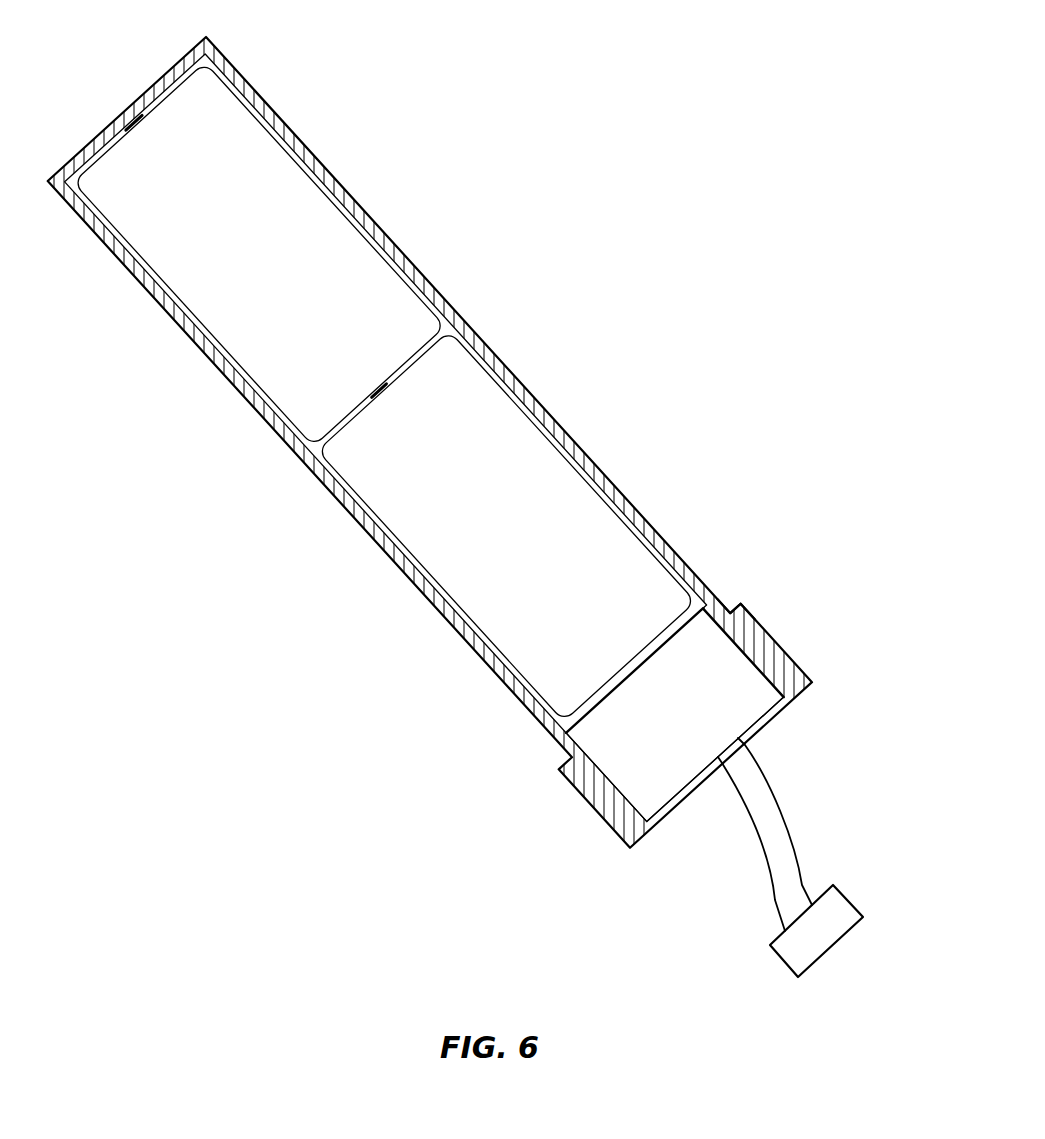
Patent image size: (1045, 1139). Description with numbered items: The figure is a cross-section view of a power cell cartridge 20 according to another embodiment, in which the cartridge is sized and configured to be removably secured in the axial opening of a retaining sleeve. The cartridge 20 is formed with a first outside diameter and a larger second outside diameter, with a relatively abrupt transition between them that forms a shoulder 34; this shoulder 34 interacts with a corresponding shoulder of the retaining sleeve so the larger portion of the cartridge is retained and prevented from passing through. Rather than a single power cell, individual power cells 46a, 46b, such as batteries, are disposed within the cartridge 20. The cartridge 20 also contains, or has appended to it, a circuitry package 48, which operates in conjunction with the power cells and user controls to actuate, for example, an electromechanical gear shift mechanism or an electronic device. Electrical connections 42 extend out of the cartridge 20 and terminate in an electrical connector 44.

The power cell cartridge 20 is at (385, 232).
The shoulder 34 is at (731, 609).
The electrical connections 42 is at (787, 827).
The electrical connector 44 is at (848, 894).
The individual power cell 46a is at (243, 180).
The individual power cell 46b is at (527, 493).
The circuitry package 48 is at (725, 658).